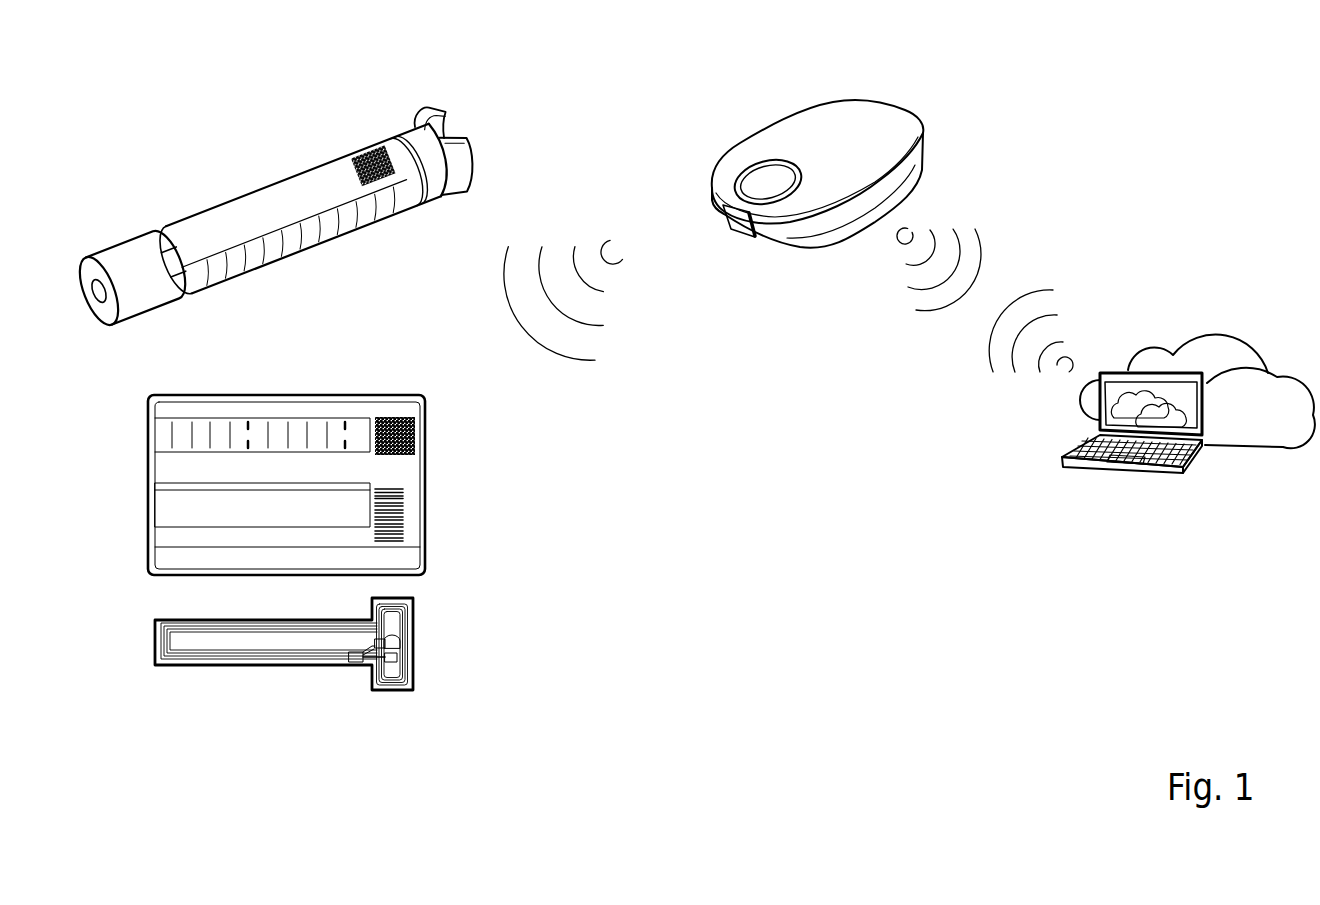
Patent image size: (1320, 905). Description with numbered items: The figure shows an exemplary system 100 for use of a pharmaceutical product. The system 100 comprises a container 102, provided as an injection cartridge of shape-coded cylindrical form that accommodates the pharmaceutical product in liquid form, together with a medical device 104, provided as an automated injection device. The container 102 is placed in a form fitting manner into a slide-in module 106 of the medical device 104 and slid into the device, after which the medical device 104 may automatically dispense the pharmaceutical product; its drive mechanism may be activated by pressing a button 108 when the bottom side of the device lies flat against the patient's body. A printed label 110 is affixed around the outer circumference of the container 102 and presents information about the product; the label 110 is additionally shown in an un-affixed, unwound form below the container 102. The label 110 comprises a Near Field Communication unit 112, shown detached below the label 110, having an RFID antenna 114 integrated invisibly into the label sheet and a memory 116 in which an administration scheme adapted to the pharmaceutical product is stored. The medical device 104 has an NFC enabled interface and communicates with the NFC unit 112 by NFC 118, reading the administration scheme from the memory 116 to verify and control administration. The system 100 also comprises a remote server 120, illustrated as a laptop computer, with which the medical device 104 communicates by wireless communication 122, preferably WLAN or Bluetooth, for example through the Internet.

The system 100 is at (1070, 98).
The container 102 is at (258, 190).
The medical device 104 is at (847, 100).
The slide-in module 106 is at (727, 220).
The button 108 is at (765, 182).
The printed label 110 is at (425, 529).
The Near Field Communication (NFC) unit 112 is at (327, 671).
The RFID antenna 114 is at (250, 653).
The memory 116 is at (408, 634).
The NFC communication 118 is at (542, 248).
The remote server 120 is at (1118, 462).
The wireless communication 122 is at (980, 250).